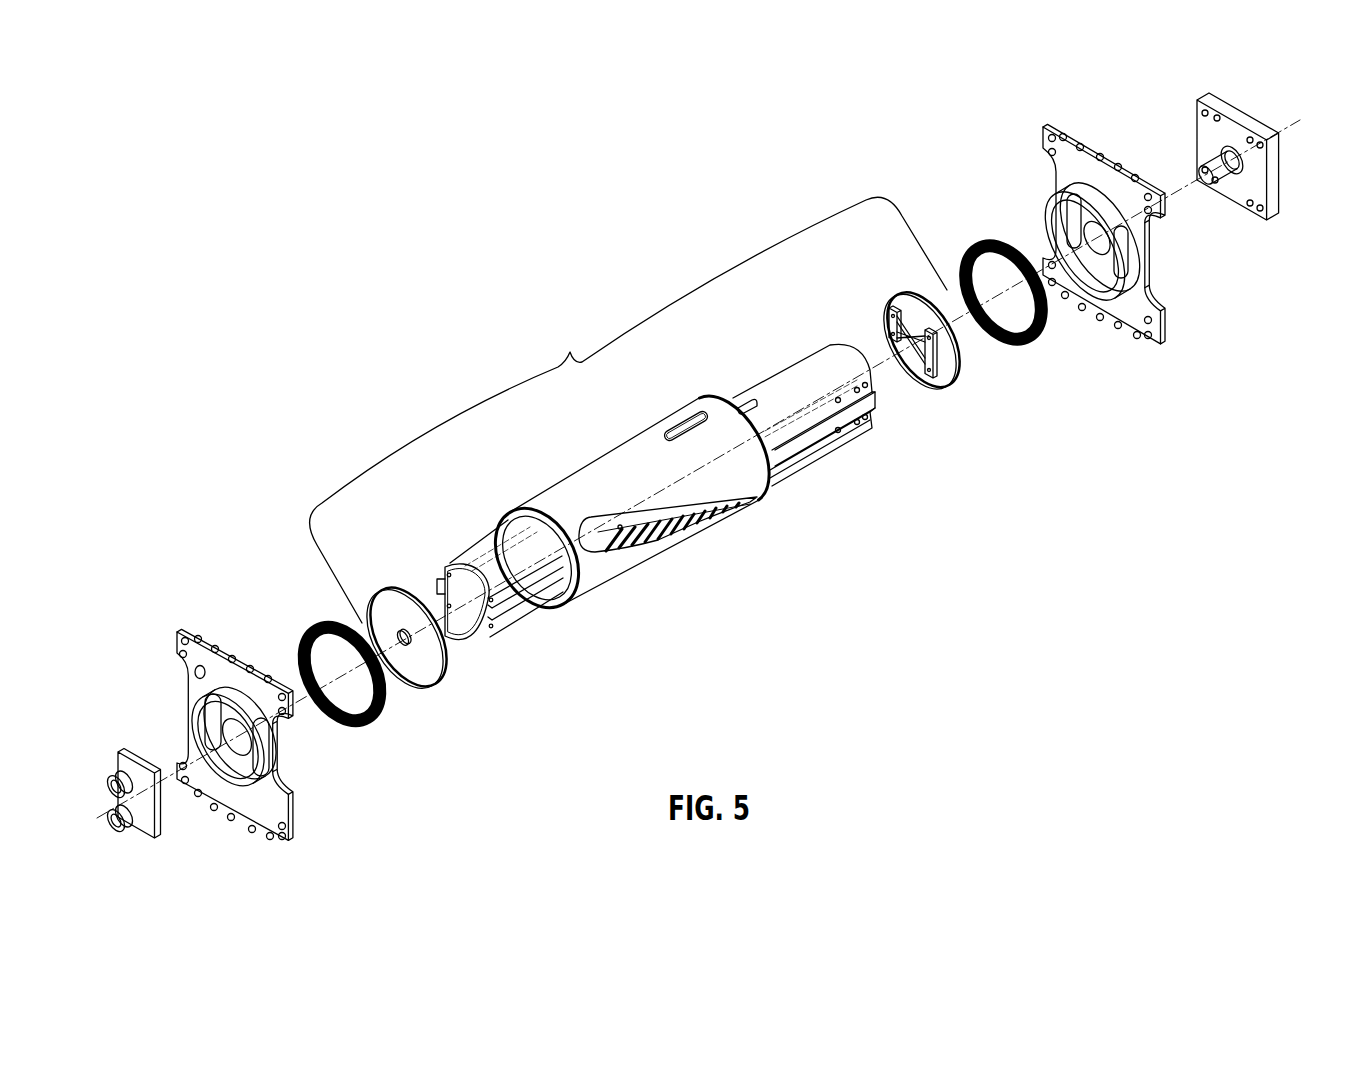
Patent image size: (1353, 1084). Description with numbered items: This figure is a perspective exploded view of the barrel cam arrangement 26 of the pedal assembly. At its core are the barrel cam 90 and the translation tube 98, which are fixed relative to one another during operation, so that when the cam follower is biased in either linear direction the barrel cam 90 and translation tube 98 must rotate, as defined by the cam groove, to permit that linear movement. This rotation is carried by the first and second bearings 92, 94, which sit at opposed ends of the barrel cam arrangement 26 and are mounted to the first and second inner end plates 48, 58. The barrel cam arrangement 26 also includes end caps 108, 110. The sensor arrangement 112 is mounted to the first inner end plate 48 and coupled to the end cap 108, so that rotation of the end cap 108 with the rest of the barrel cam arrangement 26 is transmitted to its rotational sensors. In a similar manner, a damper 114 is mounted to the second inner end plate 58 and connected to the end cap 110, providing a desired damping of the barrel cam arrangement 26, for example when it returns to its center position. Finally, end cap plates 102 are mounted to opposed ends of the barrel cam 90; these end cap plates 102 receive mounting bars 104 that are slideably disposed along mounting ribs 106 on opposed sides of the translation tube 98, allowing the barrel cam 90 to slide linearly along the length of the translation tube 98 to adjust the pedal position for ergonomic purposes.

The barrel cam arrangement 26 is at (628, 410).
The first inner end plate 48 is at (285, 803).
The second inner end plate 58 is at (1165, 343).
The barrel cam 90 is at (625, 565).
The first bearing 92 is at (378, 718).
The second bearing 94 is at (1045, 338).
The translation tube 98 is at (510, 620).
The end cap plates 102 is at (567, 610).
The mounting bars 104 is at (665, 525).
The mounting ribs 106 is at (822, 447).
The end cap 108 is at (442, 668).
The end cap 110 is at (956, 378).
The sensor arrangement 112 is at (124, 732).
The damper 114 is at (1262, 252).